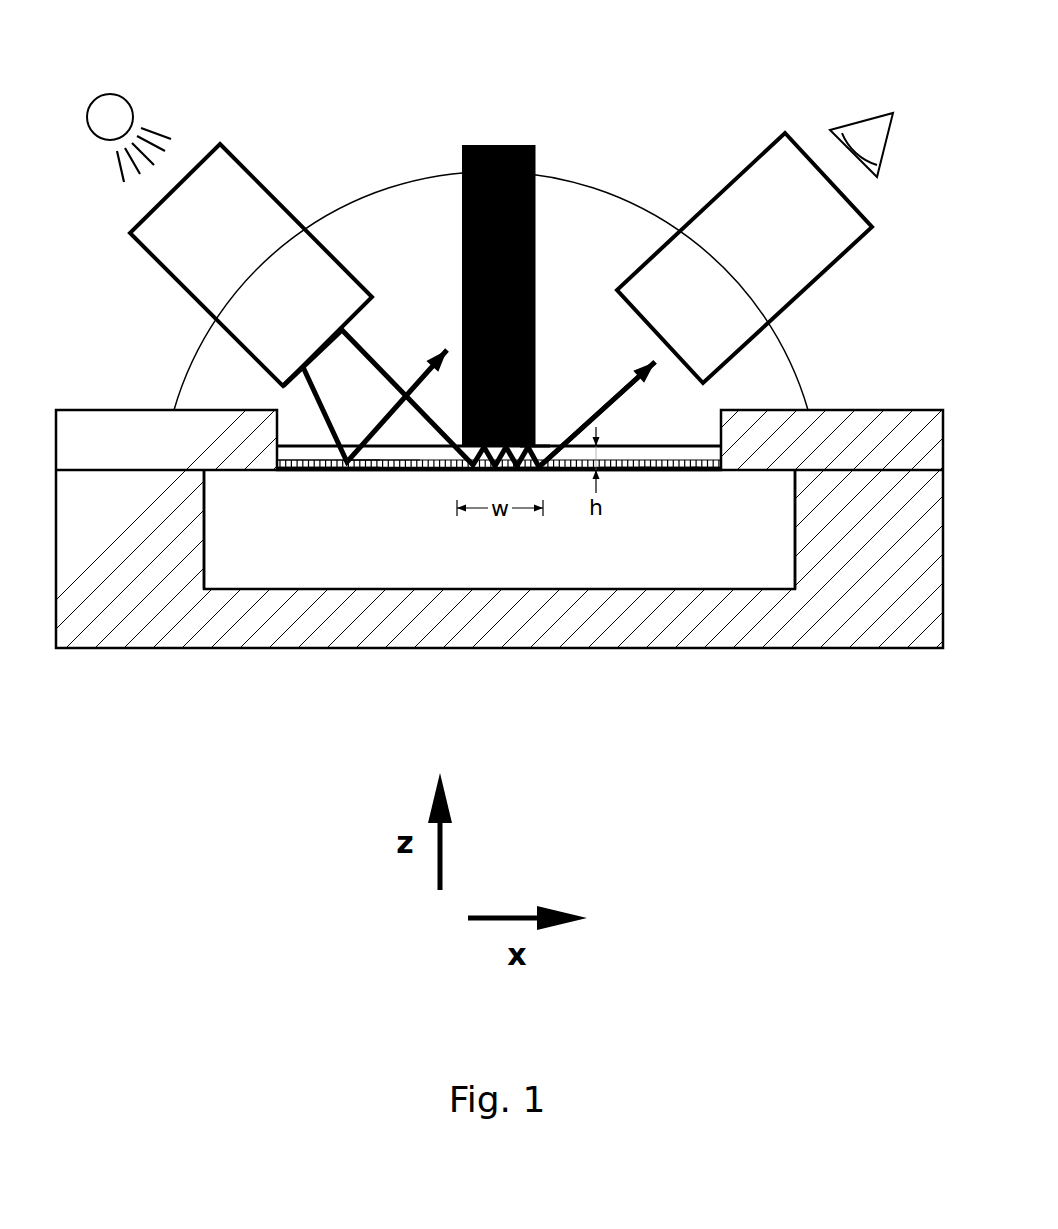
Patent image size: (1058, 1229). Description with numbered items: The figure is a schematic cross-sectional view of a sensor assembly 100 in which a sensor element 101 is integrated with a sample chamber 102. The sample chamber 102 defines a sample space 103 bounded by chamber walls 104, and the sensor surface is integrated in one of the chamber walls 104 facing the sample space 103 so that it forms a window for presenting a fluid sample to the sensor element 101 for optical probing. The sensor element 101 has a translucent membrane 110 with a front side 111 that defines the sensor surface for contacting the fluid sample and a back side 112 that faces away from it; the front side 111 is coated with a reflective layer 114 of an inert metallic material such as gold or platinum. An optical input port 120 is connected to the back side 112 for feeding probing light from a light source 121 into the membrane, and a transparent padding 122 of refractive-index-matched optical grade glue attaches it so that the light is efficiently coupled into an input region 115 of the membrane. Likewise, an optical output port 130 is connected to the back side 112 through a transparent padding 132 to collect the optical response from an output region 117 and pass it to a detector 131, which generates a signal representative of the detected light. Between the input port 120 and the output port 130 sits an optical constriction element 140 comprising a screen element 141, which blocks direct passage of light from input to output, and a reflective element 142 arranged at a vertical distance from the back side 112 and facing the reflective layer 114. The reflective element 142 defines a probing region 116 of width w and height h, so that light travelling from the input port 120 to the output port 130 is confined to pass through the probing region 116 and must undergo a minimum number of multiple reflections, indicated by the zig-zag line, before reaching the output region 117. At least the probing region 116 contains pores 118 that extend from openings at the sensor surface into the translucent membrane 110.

The sensor assembly 100 is at (333, 698).
The sensor element 101 is at (703, 122).
The sample chamber 102 is at (645, 652).
The sample space 103 is at (499, 529).
The chamber walls 104 is at (238, 472).
The translucent membrane 110 is at (317, 445).
The front side 111 is at (308, 470).
The back side 112 is at (320, 462).
The reflective layer 114 is at (673, 472).
The input region 115 is at (372, 457).
The probing region 116 is at (537, 472).
The output region 117 is at (623, 472).
The pores 118 is at (707, 472).
The optical input port 120 is at (245, 215).
The light source 121 is at (112, 112).
The transparent padding 122 is at (397, 220).
The optical output port 130 is at (790, 232).
The detector 131 is at (875, 137).
The transparent padding 132 is at (590, 232).
The optical constriction element 140 is at (462, 245).
The screen element 141 is at (537, 245).
The reflective element 142 is at (537, 443).